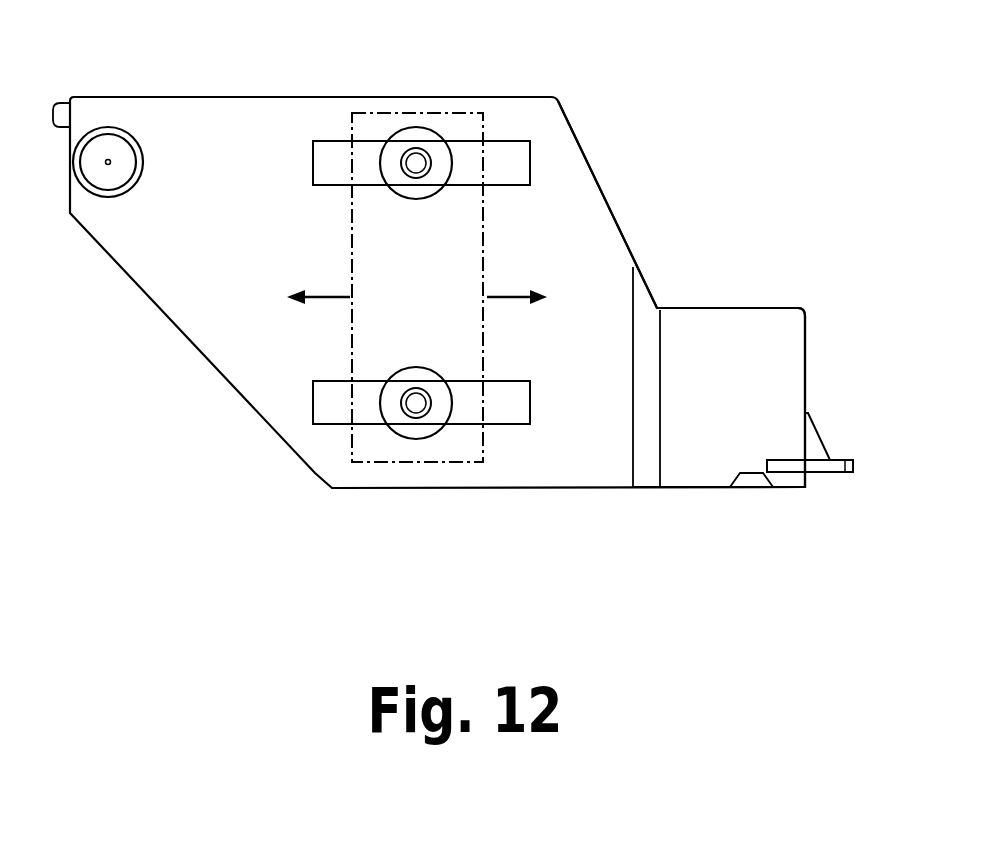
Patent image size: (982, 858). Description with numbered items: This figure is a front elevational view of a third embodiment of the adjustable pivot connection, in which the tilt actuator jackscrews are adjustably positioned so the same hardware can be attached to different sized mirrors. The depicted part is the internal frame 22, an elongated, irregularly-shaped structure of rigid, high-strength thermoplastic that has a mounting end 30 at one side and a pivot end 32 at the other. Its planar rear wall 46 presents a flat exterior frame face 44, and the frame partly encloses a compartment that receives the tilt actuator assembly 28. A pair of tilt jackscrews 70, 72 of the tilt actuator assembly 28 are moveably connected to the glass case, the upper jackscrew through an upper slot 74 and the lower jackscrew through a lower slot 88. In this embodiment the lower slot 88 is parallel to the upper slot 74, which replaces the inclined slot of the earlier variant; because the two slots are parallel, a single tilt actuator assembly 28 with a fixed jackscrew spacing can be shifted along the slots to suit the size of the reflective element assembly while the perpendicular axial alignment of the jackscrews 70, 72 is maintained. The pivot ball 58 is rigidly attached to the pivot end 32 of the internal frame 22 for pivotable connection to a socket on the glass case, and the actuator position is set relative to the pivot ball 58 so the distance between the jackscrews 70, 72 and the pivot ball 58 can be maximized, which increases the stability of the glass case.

The internal frame 22 is at (756, 298).
The tilt actuator assembly 28 is at (483, 275).
The mounting end 30 is at (93, 280).
The pivot end 32 is at (830, 487).
The exterior frame face 44 is at (288, 262).
The rear wall 46 is at (550, 227).
The pivot ball 58 is at (108, 143).
The tilt jackscrew 70 is at (377, 148).
The tilt jackscrew 72 is at (410, 412).
The upper slot 74 is at (327, 163).
The lower slot 88 is at (502, 408).